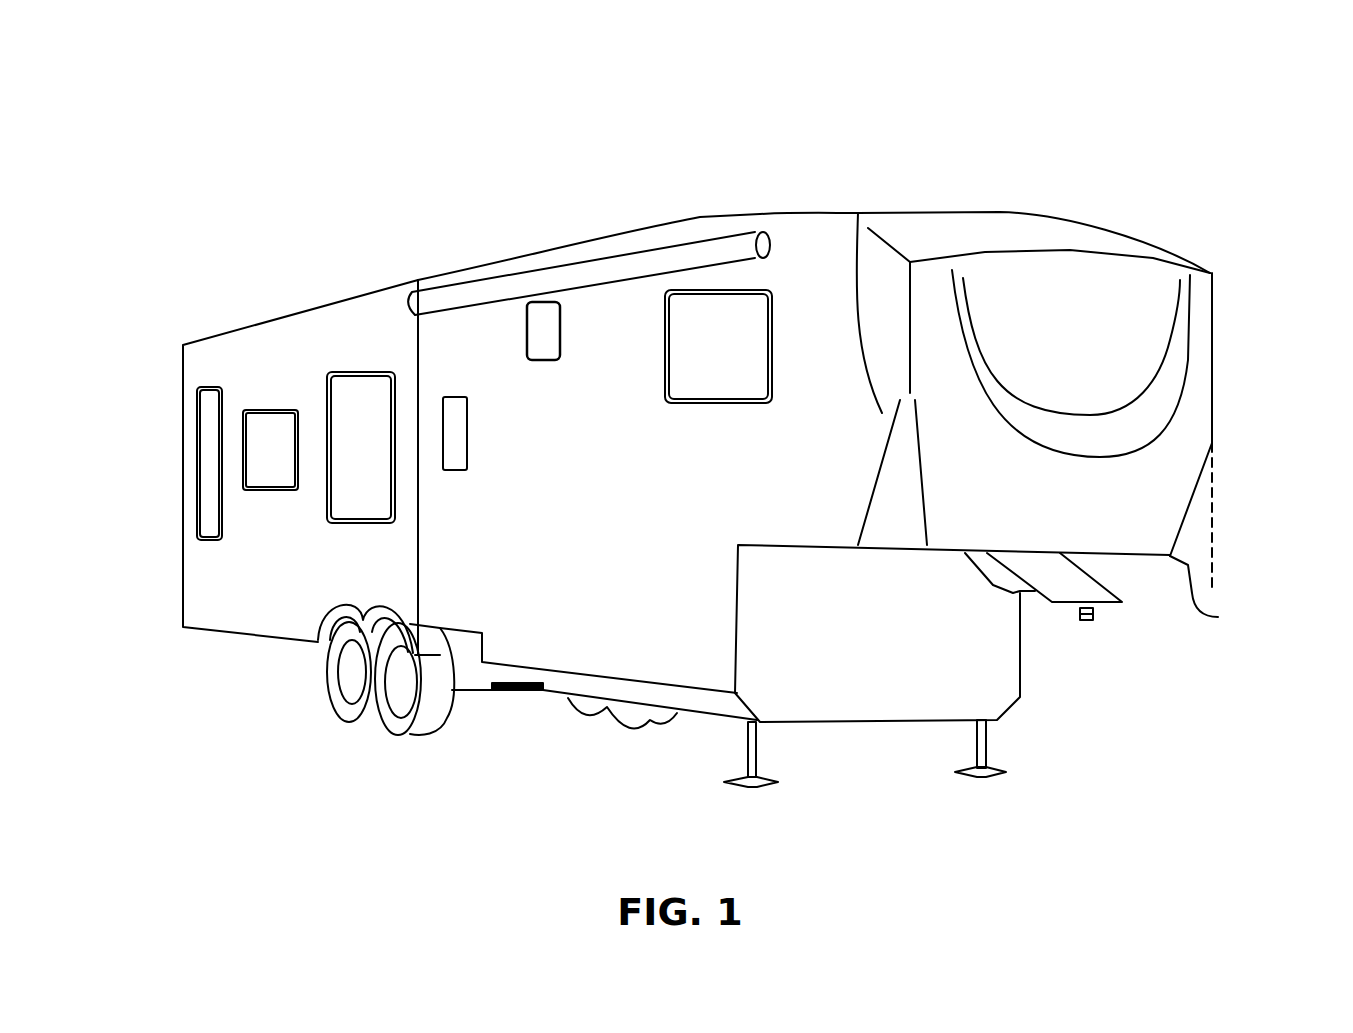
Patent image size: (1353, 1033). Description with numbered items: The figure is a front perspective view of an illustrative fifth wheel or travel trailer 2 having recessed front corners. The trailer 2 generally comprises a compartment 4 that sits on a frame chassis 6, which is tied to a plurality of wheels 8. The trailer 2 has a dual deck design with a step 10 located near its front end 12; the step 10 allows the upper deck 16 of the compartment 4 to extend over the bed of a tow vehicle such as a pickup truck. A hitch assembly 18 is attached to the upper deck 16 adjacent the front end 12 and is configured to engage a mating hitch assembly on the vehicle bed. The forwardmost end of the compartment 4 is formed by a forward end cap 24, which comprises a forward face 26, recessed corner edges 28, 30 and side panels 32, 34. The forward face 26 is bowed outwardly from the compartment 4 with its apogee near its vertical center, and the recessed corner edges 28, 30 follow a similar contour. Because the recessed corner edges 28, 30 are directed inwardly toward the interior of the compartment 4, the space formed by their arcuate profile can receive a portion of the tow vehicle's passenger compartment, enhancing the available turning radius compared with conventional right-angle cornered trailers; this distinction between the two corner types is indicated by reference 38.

The trailer 2 is at (678, 88).
The compartment 4 is at (285, 310).
The frame chassis 6 is at (543, 690).
The wheels 8 is at (360, 778).
The step 10 is at (777, 587).
The front end 12 is at (1228, 440).
The upper deck 16 is at (963, 554).
The hitch assembly 18 is at (1112, 604).
The forward end cap 24 is at (1068, 252).
The forward face 26 is at (1098, 352).
The recessed corner edge 28 is at (903, 526).
The recessed corner edge 30 is at (1198, 504).
The side panel 32 is at (858, 213).
The side panel 34 is at (1200, 298).
The corner type distinction 38 is at (1195, 568).